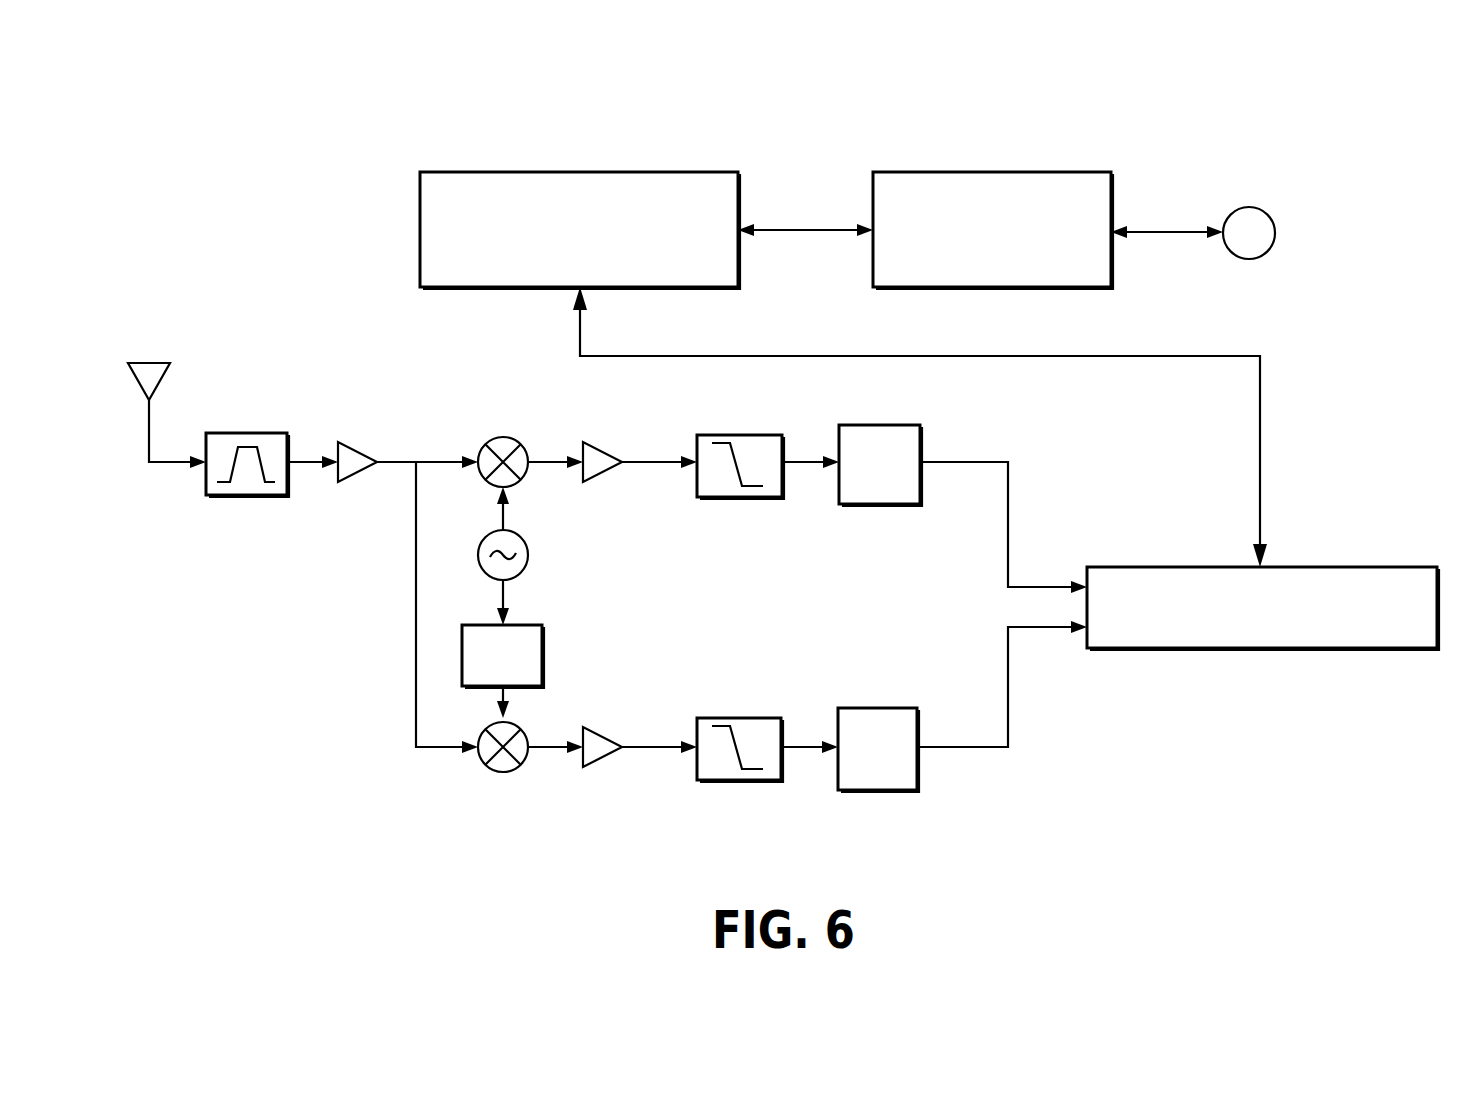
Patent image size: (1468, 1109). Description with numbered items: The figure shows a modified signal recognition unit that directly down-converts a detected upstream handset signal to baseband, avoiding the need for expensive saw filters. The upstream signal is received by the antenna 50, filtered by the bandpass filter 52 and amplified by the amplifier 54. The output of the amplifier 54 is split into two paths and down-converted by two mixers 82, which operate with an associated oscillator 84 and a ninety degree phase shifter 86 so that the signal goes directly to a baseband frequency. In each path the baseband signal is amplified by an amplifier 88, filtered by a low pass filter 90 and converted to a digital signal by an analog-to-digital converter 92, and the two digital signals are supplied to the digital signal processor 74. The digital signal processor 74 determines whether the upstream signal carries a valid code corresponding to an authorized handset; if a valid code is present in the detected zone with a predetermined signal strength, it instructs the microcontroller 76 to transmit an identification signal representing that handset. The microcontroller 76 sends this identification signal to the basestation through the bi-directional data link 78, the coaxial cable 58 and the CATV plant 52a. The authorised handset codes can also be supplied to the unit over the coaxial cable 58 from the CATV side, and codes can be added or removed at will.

The antenna 50 is at (161, 373).
The bandpass filter 52 is at (248, 497).
The CATV plant 52a is at (1258, 256).
The amplifier 54 is at (351, 483).
The coaxial cable 58 is at (1163, 234).
The digital signal processor 74 is at (1195, 648).
The microcontroller 76 is at (500, 288).
The bi-directional data link 78 is at (940, 288).
The mixer 82 is at (496, 439).
The oscillator 84 is at (528, 557).
The 90 degree phase shifter 86 is at (542, 655).
The amplifiers 88 is at (607, 444).
The lowpass filter 90 is at (752, 434).
The analog-to-digital converter 92 is at (888, 424).